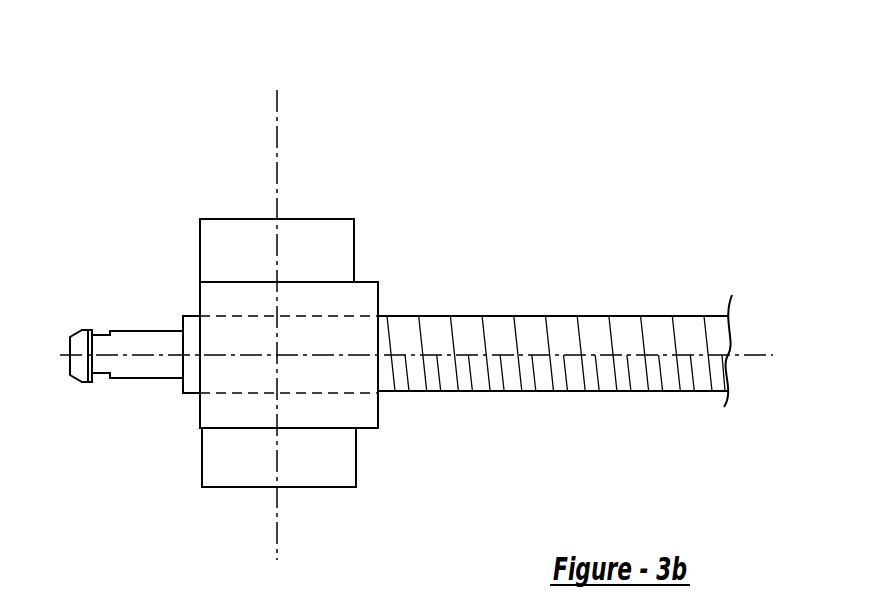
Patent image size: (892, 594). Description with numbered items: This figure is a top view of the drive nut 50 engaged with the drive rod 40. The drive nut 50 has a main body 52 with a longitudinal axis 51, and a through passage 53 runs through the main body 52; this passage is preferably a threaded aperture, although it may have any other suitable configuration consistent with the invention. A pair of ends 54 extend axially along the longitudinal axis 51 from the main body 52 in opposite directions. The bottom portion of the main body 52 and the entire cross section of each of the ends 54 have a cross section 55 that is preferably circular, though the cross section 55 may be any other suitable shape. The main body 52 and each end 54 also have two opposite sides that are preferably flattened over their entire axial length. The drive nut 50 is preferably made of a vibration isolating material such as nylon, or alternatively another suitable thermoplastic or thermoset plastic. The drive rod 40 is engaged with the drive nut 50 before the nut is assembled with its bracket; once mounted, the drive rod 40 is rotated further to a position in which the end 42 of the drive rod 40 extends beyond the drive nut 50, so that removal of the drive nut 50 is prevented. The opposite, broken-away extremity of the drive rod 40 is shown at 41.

The drive rod 40 is at (563, 316).
The end of lead screw 41 is at (764, 348).
The end of drive rod 42 is at (90, 330).
The drive nut 50 is at (364, 347).
The longitudinal axis 51 is at (276, 138).
The main body 52 is at (380, 283).
The threaded bore 53 is at (350, 393).
The ends 54 is at (287, 218).
The cross section 55 is at (203, 293).